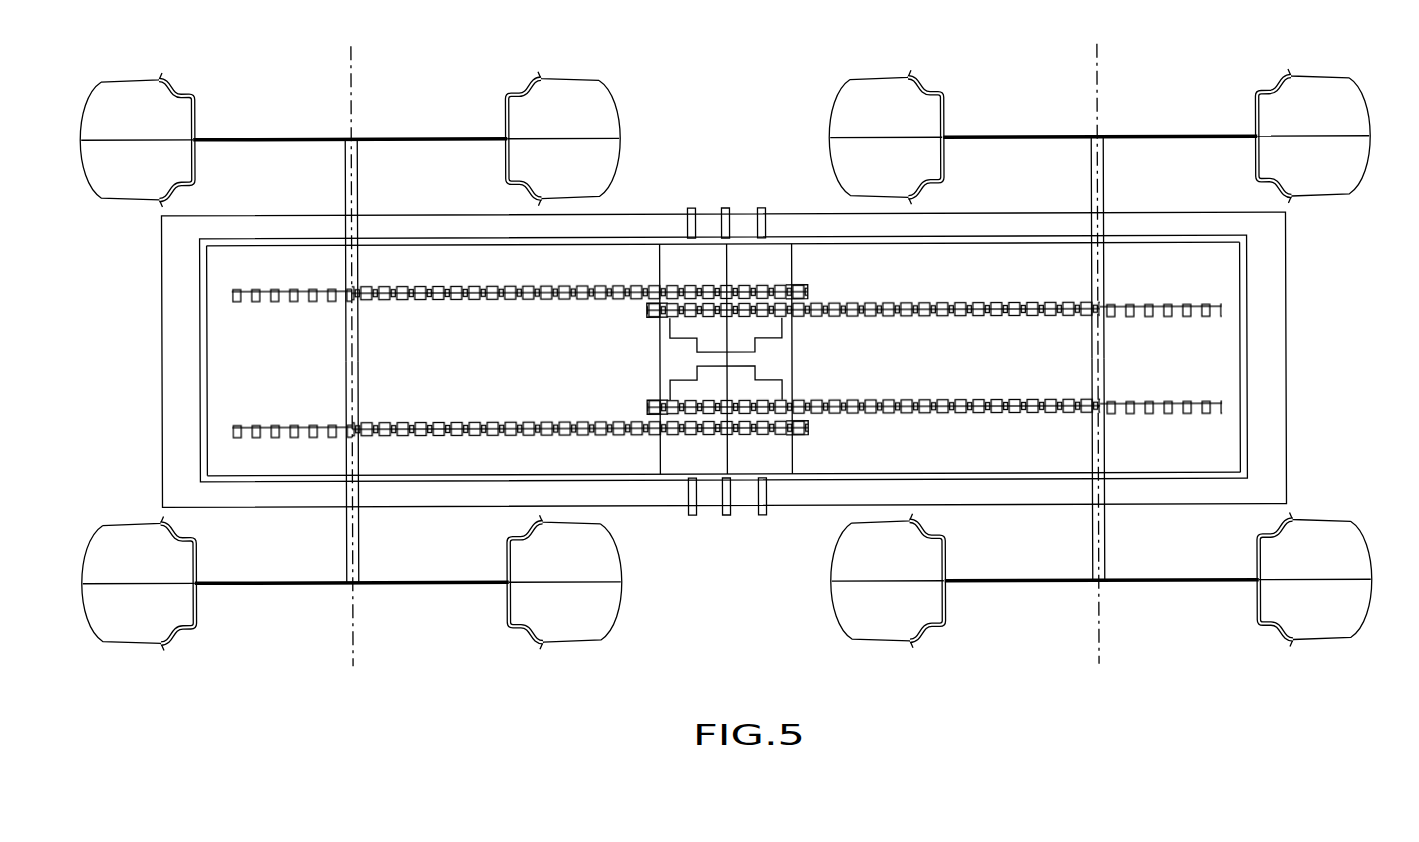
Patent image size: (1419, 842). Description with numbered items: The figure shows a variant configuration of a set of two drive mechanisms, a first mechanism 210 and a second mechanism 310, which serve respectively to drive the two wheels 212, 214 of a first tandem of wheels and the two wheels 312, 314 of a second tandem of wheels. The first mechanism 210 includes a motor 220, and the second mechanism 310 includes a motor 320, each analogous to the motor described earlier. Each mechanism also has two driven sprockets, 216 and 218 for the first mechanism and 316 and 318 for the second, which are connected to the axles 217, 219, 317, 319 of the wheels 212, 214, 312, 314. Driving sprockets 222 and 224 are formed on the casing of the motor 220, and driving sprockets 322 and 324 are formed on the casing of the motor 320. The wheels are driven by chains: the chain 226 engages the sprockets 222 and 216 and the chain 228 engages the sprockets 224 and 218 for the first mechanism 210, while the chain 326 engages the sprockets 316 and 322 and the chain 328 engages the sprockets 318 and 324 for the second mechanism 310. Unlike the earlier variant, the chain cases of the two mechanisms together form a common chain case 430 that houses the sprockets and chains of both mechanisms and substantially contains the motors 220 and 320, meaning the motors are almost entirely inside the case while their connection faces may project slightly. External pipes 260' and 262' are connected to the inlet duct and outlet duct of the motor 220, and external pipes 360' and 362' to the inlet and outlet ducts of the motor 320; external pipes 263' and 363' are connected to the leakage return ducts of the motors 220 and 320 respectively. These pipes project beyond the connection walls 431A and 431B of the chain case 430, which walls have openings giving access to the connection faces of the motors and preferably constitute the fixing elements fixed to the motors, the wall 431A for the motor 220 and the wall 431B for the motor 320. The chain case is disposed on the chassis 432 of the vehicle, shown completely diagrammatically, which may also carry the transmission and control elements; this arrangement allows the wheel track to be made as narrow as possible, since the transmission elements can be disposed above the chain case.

The first mechanism 210 is at (735, 110).
The wheel 212 is at (607, 98).
The wheel 214 is at (1328, 78).
The driven sprocket 216 is at (383, 276).
The axle 217 is at (346, 186).
The driven sprocket 218 is at (1139, 274).
The axle 219 is at (1104, 178).
The motor 220 is at (678, 328).
The driving sprocket 222 is at (822, 289).
The driving sprocket 224 is at (642, 311).
The chain 226 is at (502, 286).
The chain 228 is at (984, 303).
The external pipe 260' is at (786, 192).
The external pipe 262' is at (673, 192).
The external pipe 263' is at (729, 192).
The second mechanism 310 is at (730, 583).
The wheel 312 is at (612, 608).
The wheel 314 is at (1353, 607).
The driven sprocket 316 is at (326, 452).
The axle 317 is at (358, 547).
The driven sprocket 318 is at (1134, 426).
The axle 319 is at (1092, 540).
The motor 320 is at (778, 391).
The driving sprocket 322 is at (816, 432).
The driving sprocket 324 is at (642, 393).
The chain 326 is at (432, 420).
The chain 328 is at (981, 414).
The external pipe 360' is at (786, 526).
The external pipe 362' is at (664, 526).
The external pipe 363' is at (730, 526).
The common chain case 430 is at (200, 348).
The connection wall 431A is at (1000, 234).
The connection wall 431B is at (978, 482).
The chassis 432 is at (162, 273).